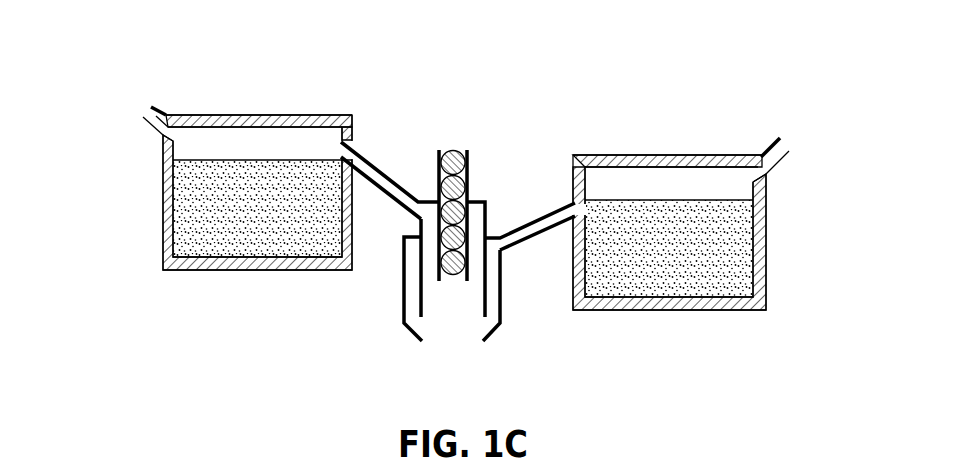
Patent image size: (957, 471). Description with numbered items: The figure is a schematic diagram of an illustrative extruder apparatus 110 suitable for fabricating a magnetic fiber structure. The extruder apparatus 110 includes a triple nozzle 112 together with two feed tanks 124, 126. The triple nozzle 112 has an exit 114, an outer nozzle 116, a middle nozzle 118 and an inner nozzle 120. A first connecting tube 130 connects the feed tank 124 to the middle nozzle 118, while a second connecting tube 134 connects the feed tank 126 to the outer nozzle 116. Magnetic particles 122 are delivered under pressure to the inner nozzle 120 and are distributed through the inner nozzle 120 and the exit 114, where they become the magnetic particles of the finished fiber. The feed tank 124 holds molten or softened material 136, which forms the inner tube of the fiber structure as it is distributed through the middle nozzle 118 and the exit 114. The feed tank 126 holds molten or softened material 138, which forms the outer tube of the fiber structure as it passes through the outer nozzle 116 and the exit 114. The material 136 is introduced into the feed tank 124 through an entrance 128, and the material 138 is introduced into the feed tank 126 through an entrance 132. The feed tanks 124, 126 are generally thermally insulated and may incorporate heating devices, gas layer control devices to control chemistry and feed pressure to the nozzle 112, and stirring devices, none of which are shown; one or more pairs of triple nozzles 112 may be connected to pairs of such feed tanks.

The extruder apparatus 110 is at (618, 62).
The triple nozzle 112 is at (503, 337).
The exit 114 is at (453, 347).
The outer nozzle 116 is at (396, 333).
The middle nozzle 118 is at (480, 190).
The inner nozzle 120 is at (433, 148).
The magnetic particles 122 is at (453, 146).
The feed tank 124 is at (232, 110).
The feed tank 126 is at (662, 147).
The entrance 128 is at (156, 102).
The first connecting tube 130 is at (375, 158).
The entrance 132 is at (775, 128).
The second connecting tube 134 is at (548, 194).
The molten or softened material 136 is at (239, 233).
The molten or softened material 138 is at (651, 275).